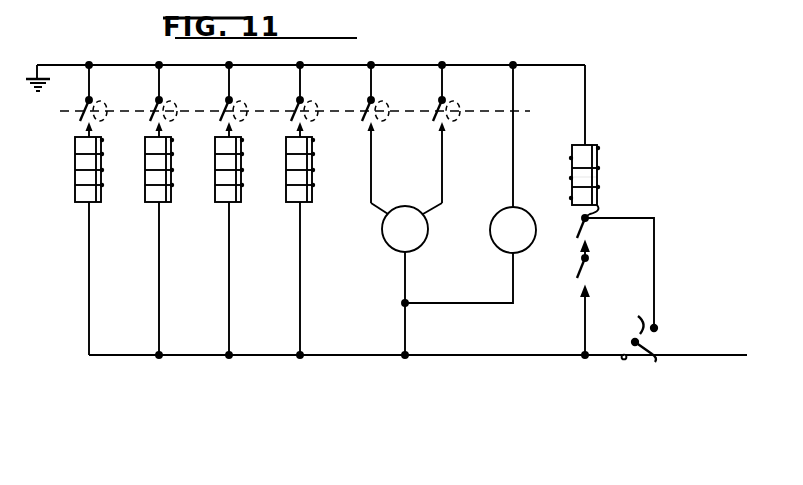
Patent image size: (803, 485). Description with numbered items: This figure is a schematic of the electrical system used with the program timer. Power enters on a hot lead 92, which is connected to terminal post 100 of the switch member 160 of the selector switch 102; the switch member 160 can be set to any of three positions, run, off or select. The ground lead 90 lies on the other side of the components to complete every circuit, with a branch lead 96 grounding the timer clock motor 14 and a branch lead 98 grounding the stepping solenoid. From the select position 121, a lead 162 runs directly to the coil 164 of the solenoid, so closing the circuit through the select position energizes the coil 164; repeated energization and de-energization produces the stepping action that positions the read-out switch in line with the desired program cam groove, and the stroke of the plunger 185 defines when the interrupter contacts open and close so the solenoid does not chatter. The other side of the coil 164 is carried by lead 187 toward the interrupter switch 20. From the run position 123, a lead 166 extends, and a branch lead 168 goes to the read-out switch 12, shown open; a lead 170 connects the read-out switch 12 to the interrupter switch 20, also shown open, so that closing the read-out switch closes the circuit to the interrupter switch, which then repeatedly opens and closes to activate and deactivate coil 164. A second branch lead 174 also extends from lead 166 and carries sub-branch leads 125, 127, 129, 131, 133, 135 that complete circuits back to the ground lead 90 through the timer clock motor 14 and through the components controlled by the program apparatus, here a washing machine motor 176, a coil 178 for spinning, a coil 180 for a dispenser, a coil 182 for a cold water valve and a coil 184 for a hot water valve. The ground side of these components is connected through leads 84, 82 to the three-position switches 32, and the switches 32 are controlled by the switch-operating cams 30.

The switch-operating cam 30 is at (104, 102).
The three-position switch 32 is at (83, 101).
The conductor 84 is at (85, 136).
The conductor 82 is at (155, 136).
The coil 184 is at (101, 202).
The coil 182 is at (171, 202).
The coil 180 is at (241, 202).
The coil 178 is at (312, 202).
The sub-branch lead 135 is at (89, 271).
The sub-branch lead 133 is at (159, 271).
The sub-branch lead 131 is at (229, 273).
The sub-branch lead 129 is at (300, 282).
The washing machine motor 176 is at (389, 246).
The timer clock motor 14 is at (495, 247).
The sub-branch lead 127 is at (404, 279).
The sub-branch lead 125 is at (448, 303).
The branch lead 96 is at (513, 130).
The ground lead 90 is at (535, 65).
The branch lead 98 is at (585, 108).
The coil 164 is at (572, 172).
The plunger 185 is at (598, 175).
The lead 187 is at (581, 222).
The lead 162 is at (654, 256).
The interrupter switch 20 is at (580, 236).
The lead 170 is at (586, 258).
The read-out switch 12 is at (580, 277).
The branch lead 168 is at (584, 316).
The selector switch 102 is at (625, 317).
The select position 121 is at (657, 323).
The switch member 160 is at (652, 350).
The lead 166 is at (596, 357).
The run position 123 is at (621, 359).
The terminal post 100 is at (657, 360).
The hot lead 92 is at (707, 359).
The second branch lead 174 is at (480, 358).